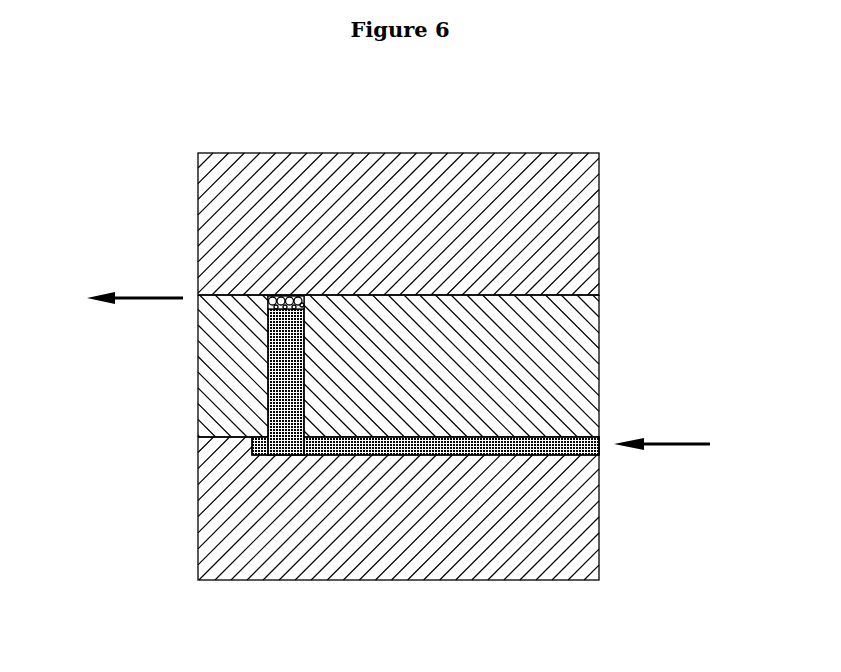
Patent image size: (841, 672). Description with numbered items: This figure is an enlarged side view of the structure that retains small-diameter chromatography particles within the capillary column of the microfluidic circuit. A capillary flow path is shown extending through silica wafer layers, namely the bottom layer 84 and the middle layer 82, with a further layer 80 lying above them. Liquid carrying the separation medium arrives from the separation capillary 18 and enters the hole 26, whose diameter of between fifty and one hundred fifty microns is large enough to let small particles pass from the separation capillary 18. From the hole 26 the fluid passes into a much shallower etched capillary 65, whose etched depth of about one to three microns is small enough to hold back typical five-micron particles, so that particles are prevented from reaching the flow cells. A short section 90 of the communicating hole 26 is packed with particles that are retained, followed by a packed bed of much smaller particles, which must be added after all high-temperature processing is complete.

The upper layer 80 is at (437, 188).
The middle layer 82 is at (537, 355).
The bottom layer 84 is at (563, 498).
The separation capillary 18 is at (553, 437).
The hole 26 is at (268, 368).
The short section 90 is at (282, 298).
The etched capillary 65 is at (237, 296).